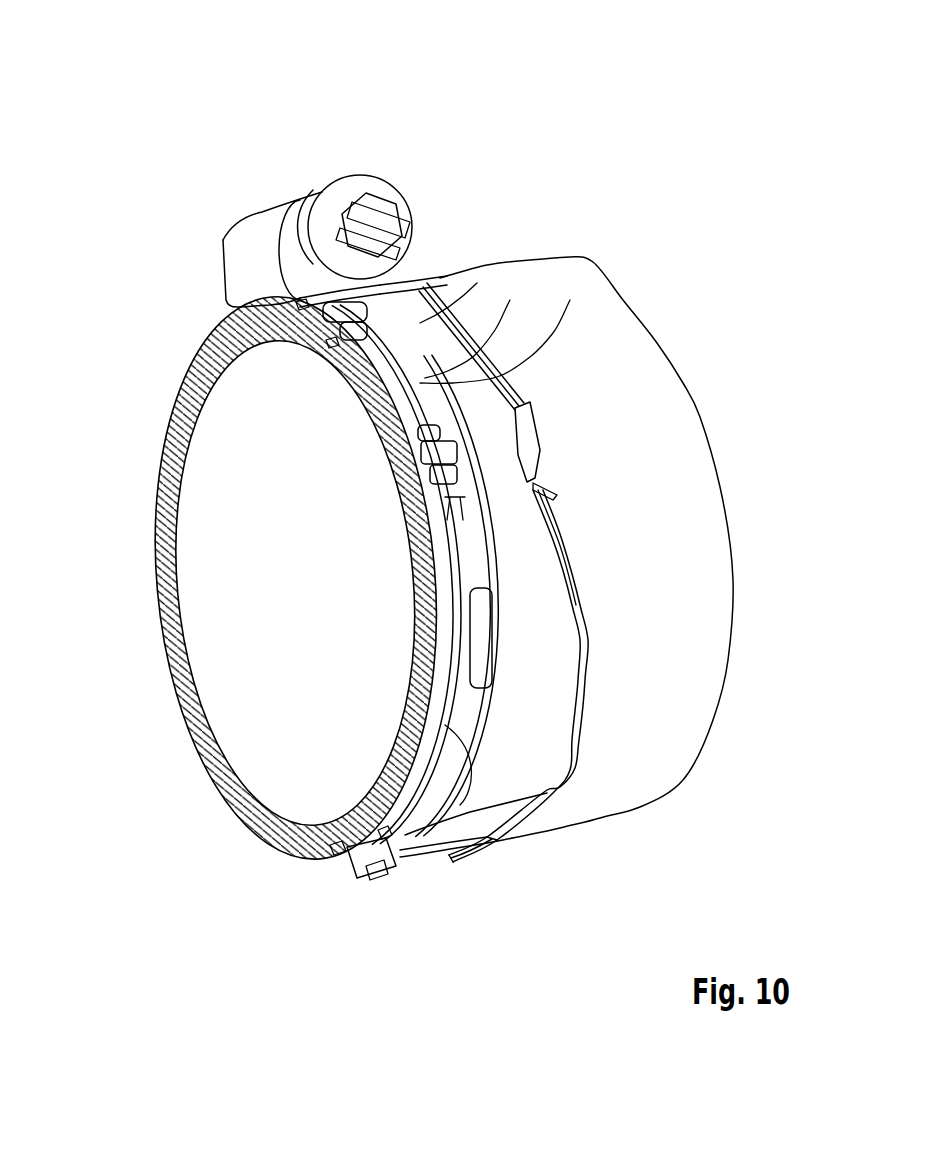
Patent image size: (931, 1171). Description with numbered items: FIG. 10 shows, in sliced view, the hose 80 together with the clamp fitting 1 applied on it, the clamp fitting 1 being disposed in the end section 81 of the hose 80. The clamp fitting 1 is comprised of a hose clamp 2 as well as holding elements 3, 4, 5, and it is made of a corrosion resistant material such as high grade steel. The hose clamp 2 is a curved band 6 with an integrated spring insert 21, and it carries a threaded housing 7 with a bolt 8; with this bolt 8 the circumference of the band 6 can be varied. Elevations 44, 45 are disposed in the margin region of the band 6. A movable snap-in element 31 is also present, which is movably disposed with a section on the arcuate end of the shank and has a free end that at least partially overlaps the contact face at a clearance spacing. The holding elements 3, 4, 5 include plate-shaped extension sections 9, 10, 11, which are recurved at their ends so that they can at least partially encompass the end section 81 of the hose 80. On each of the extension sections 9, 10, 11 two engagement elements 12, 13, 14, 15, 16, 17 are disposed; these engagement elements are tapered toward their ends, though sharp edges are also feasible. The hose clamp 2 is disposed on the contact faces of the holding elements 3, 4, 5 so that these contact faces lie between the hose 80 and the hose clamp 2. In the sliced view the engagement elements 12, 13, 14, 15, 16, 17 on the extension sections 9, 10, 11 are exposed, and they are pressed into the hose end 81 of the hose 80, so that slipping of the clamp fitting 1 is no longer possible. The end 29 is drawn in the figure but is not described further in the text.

The clamp fitting 1 is at (207, 140).
The hose clamp 2 is at (522, 826).
The holding element 3 is at (425, 280).
The holding element 4 is at (546, 438).
The holding element 5 is at (462, 864).
The curved band 6 is at (543, 757).
The threaded housing 7 is at (240, 238).
The bolt 8 is at (392, 205).
The extension section 9 is at (298, 296).
The extension section 10 is at (321, 515).
The extension section 11 is at (297, 873).
The engagement element 12 is at (300, 308).
The engagement element 13 is at (328, 345).
The engagement element 14 is at (420, 438).
The engagement element 15 is at (446, 497).
The engagement element 16 is at (387, 838).
The engagement element 17 is at (342, 842).
The spring insert 21 is at (500, 693).
The end 29 is at (477, 283).
The snap-in element 31 is at (340, 300).
The elevation 44 is at (570, 300).
The elevation 45 is at (510, 300).
The hose 80 is at (620, 337).
The end section 81 is at (442, 272).